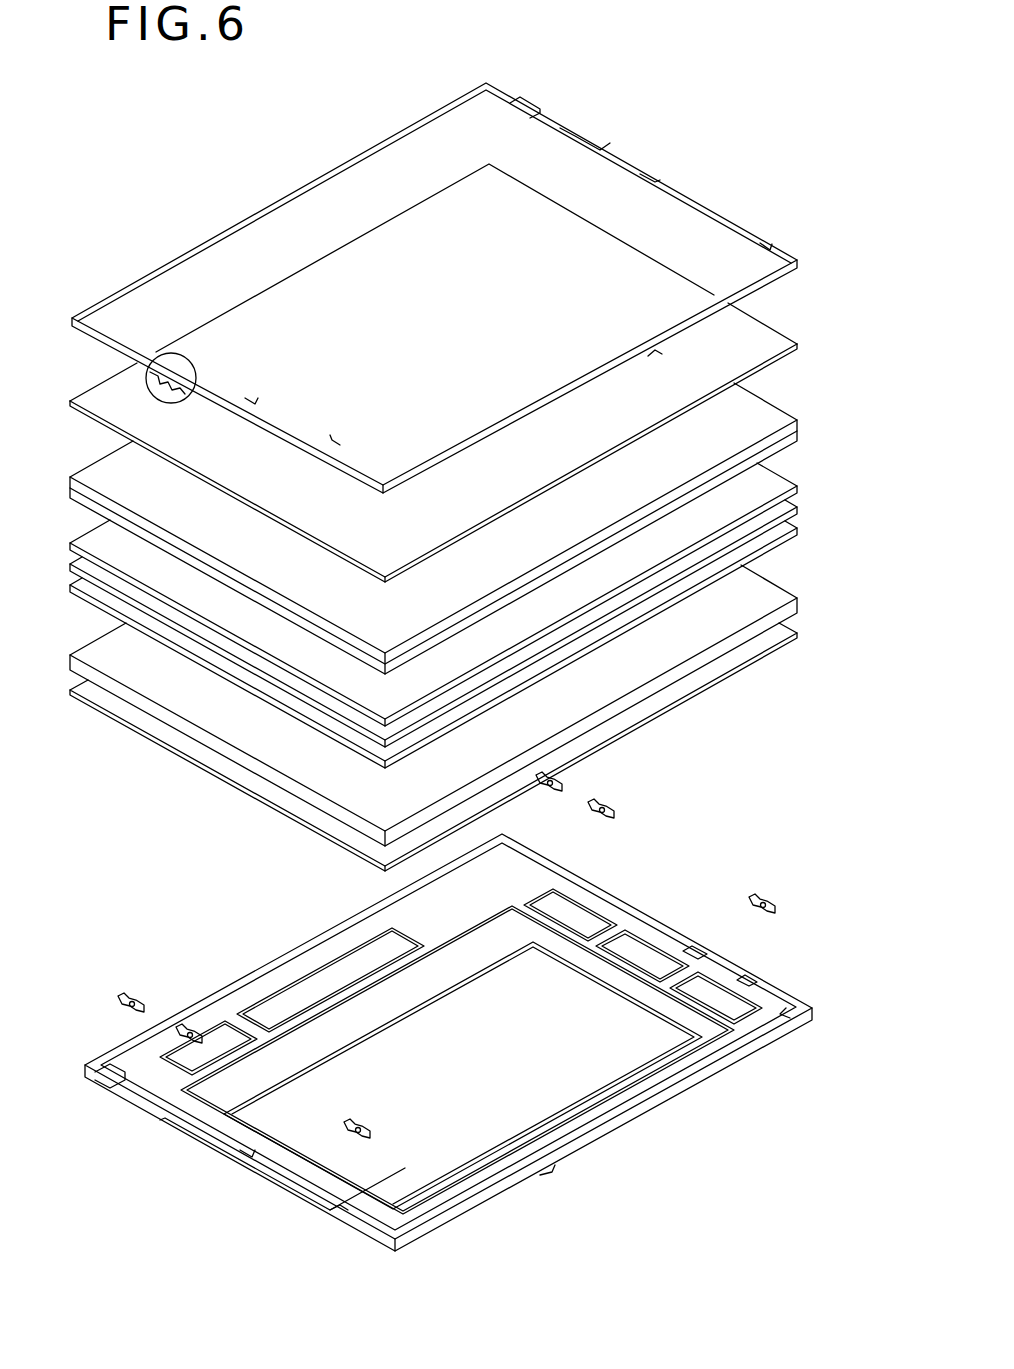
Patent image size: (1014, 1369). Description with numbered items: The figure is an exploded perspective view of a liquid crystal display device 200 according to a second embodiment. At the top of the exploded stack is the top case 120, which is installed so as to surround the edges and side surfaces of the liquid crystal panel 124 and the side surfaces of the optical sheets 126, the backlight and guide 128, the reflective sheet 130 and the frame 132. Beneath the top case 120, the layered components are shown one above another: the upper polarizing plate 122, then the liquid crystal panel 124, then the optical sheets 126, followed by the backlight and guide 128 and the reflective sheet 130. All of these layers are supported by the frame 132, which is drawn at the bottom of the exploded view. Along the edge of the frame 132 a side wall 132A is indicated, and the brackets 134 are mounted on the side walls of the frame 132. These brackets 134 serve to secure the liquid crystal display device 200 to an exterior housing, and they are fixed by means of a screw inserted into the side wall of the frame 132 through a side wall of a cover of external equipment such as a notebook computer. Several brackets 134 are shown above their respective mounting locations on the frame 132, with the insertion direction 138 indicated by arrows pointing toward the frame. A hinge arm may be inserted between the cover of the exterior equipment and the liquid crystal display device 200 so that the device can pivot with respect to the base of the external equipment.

The top case 120 is at (765, 244).
The upper polarizing plate 122 is at (768, 345).
The liquid crystal panel 124 is at (762, 413).
The optical sheets 126 is at (800, 536).
The backlight and guide 128 is at (790, 608).
The reflective sheet 130 is at (795, 637).
The frame 132 is at (279, 933).
The side wall of mold frame 132A is at (250, 1165).
The brackets 134 is at (550, 857).
The mounting direction 138 is at (586, 826).
The liquid crystal display device 200 is at (120, 870).